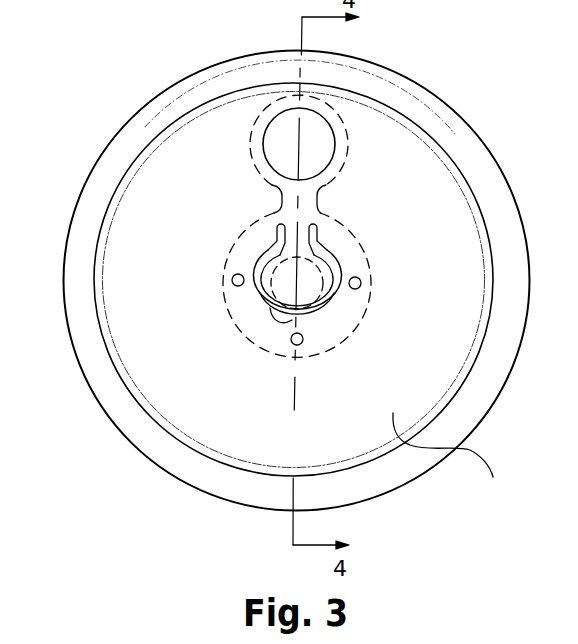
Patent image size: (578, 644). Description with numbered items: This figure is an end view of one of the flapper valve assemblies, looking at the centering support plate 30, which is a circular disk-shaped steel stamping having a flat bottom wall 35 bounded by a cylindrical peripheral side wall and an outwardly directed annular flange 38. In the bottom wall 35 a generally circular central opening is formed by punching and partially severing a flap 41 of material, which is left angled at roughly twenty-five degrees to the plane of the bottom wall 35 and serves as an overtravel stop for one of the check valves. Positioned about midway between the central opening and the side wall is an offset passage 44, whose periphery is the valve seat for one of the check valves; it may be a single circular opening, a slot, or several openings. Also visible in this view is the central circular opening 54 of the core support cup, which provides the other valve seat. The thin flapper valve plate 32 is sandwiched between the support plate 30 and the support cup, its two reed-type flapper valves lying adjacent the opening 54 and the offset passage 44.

The centering support plate 30 is at (163, 92).
The flapper valve plate 32 is at (258, 115).
The flat bottom wall 35 is at (449, 459).
The outwardly directed annular flange 38 is at (392, 493).
The flap 41 is at (330, 307).
The offset passage 44 is at (332, 141).
The central circular opening 54 is at (271, 273).